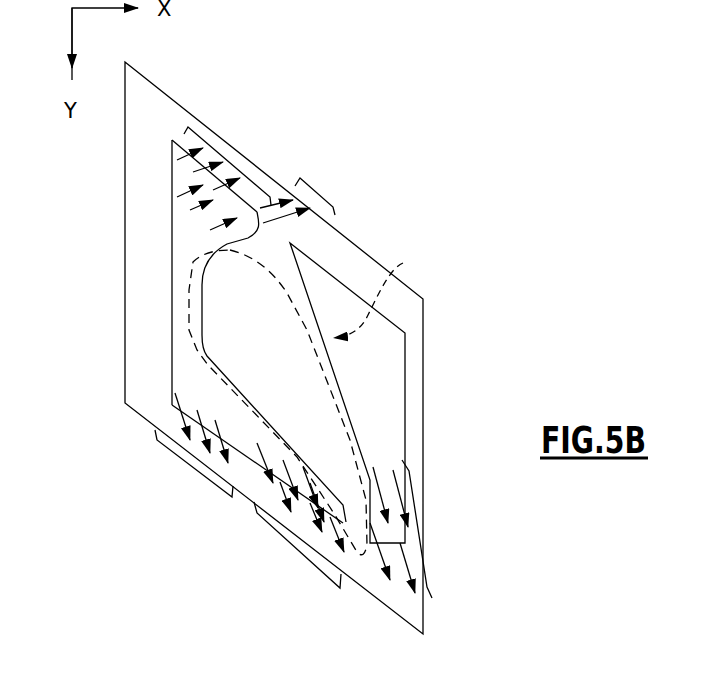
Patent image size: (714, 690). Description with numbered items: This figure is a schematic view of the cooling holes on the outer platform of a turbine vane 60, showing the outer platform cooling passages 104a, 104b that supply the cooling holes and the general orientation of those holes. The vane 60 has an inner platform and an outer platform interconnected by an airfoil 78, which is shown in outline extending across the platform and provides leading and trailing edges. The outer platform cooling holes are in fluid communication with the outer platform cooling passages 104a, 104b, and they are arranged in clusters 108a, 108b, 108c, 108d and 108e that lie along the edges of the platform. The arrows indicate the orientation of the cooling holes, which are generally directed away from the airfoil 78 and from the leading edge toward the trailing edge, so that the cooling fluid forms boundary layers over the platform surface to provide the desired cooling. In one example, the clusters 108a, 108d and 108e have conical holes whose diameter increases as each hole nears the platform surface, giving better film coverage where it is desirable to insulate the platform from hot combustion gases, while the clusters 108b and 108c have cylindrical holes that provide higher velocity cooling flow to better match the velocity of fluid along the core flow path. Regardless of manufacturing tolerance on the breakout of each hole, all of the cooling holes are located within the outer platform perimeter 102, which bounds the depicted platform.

The outer platform perimeter 102 is at (125, 270).
The outer platform cooling passage 104a is at (183, 227).
The outer platform cooling passage 104b is at (380, 387).
The airfoil 78 is at (403, 263).
The vane 60 is at (493, 326).
The cluster of cooling holes 108a is at (240, 160).
The cluster of cooling holes 108b is at (317, 203).
The cluster of cooling holes 108c is at (433, 557).
The cluster of cooling holes 108d is at (287, 550).
The cluster of cooling holes 108e is at (188, 470).